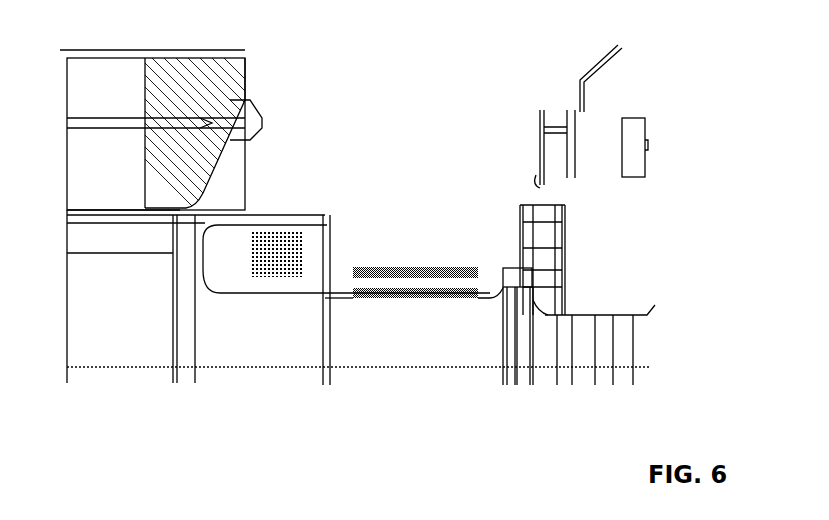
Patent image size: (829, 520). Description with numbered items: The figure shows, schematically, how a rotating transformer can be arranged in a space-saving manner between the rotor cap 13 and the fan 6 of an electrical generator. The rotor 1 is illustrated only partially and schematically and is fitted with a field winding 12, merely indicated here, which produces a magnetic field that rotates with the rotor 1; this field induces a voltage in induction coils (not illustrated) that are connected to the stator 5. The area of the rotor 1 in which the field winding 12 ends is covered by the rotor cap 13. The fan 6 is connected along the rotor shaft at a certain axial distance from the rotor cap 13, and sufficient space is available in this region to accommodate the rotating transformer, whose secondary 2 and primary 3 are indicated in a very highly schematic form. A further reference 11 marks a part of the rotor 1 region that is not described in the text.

The rotor 1 is at (124, 334).
The secondary 2 is at (430, 300).
The primary 3 is at (412, 270).
The stator 5 is at (268, 86).
The fan 6 is at (497, 232).
The surface of substrate 11 is at (107, 368).
The field winding 12 is at (282, 229).
The rotor cap 13 is at (326, 216).